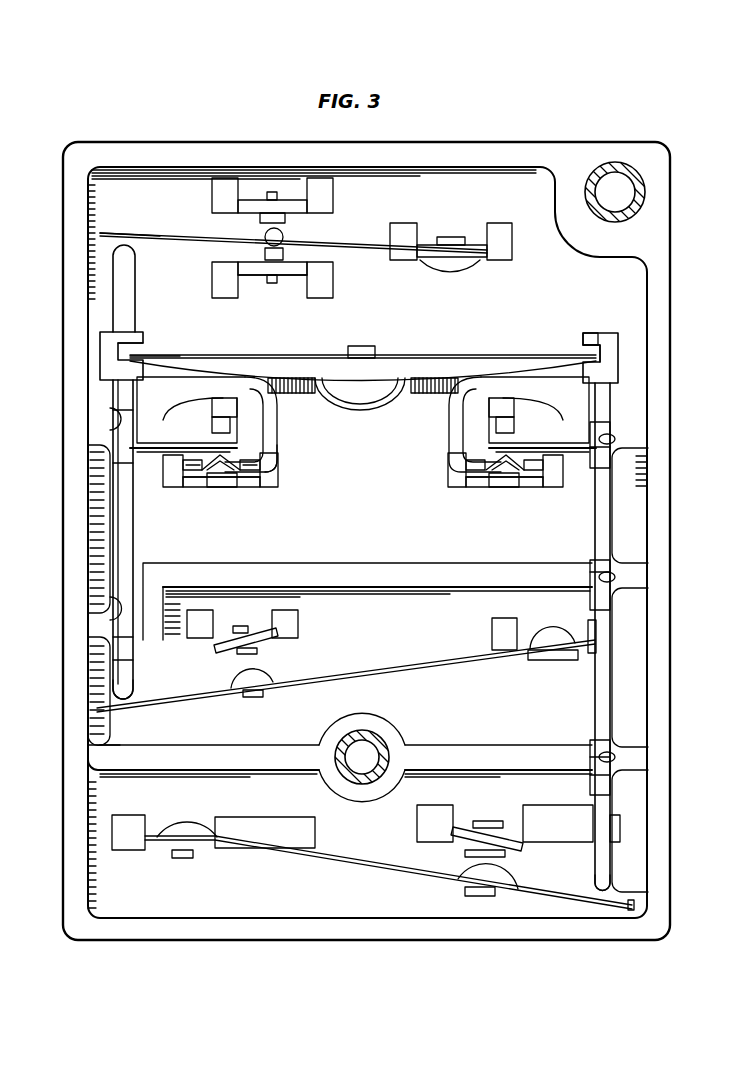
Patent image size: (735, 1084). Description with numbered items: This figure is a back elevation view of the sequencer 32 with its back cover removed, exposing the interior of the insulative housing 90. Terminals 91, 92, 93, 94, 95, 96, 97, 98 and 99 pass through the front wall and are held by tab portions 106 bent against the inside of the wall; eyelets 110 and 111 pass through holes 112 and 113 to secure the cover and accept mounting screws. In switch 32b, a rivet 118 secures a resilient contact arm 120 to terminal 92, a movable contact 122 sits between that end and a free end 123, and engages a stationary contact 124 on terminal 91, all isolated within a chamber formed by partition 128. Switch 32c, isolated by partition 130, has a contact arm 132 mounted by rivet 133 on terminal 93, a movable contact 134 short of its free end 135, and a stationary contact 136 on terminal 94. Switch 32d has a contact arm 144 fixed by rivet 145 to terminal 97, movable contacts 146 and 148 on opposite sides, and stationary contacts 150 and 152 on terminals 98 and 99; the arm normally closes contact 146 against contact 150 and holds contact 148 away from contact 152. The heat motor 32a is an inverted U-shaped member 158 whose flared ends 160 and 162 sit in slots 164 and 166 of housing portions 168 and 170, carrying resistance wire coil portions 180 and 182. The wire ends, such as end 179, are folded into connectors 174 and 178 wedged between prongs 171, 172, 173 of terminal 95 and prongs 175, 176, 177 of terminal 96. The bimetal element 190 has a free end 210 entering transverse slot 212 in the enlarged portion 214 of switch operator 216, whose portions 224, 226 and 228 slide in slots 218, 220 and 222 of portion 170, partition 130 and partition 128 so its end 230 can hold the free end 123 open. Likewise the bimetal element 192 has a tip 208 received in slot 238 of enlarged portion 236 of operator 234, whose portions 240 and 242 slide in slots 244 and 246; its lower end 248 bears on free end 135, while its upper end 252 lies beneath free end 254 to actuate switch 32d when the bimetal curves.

The sequencer 32 is at (63, 150).
The housing 90 is at (120, 150).
The stationary contact 152 is at (263, 213).
The terminal 99 is at (290, 208).
The movable contact 148 is at (284, 238).
The switch 32d is at (374, 218).
The tab portions 106 is at (500, 230).
The hole 112 is at (620, 183).
The tubular rivet or eyelet 110 is at (640, 199).
The free end of switch arm 254 is at (126, 232).
The upper end of operator 252 is at (122, 258).
The movable contact 146 is at (262, 251).
The resilient contact arm 144 is at (350, 247).
The rivet 145 is at (448, 272).
The terminal 97 is at (476, 258).
The slot 238 is at (150, 342).
The tip or free end of bimetal element 208 is at (130, 358).
The stationary contact 150 is at (268, 260).
The terminal 98 is at (292, 275).
The bimetal element 192 is at (292, 358).
The bimetal element 190 is at (418, 360).
The tip or free end of bimetal element 210 is at (593, 356).
The transverse slot 212 is at (598, 333).
The enlarged portion of switch operator 214 is at (616, 348).
The enlarged portion of switch operator 236 is at (100, 357).
The outwardly flared end 160 is at (222, 414).
The coil portion 182 is at (291, 395).
The coil portion 180 is at (420, 396).
The outwardly flared end 162 is at (505, 418).
The projecting portion of housing 170 is at (618, 423).
The slot 244 is at (116, 417).
The slot 164 is at (212, 420).
The inverted U-shaped member 158 is at (280, 426).
The connector 178 is at (200, 490).
The slot 166 is at (512, 428).
The slot 218 is at (615, 439).
The projecting portion of housing 168 is at (110, 454).
The end of resistance wire 179 is at (284, 452).
The portion of switch operator 224 is at (612, 458).
The portion of switch operator 240 is at (122, 458).
The projecting prong 173 is at (465, 468).
The elongated switch operator 216 is at (612, 508).
The projecting prong 175 is at (192, 465).
The terminal 96 is at (195, 487).
The projecting prong 176 is at (224, 488).
The projecting prong 177 is at (253, 485).
The terminal 95 is at (465, 490).
The connector 174 is at (500, 489).
The projecting prong 172 is at (507, 490).
The projecting prong 171 is at (548, 488).
The elongated switch operator 234 is at (120, 548).
The heat motor 32a is at (358, 492).
The partition or wall 130 is at (512, 573).
The slot 220 is at (615, 577).
The slot 246 is at (115, 606).
The portion of switch operator 226 is at (614, 594).
The portion of switch operator 242 is at (112, 636).
The terminal 94 is at (282, 636).
The switch 32c is at (373, 632).
The stationary contact 136 is at (240, 653).
The movable contact 134 is at (264, 672).
The terminal 93 is at (522, 650).
The rivet 133 is at (555, 662).
The lower end of operator 248 is at (118, 684).
The free end of contact arm 135 is at (100, 724).
The resilient contact arm 132 is at (302, 678).
The hole 113 is at (344, 733).
The tubular rivet or eyelet 111 is at (392, 738).
The partition or wall 128 is at (462, 758).
The slot 222 is at (615, 757).
The portion of switch operator 228 is at (606, 780).
The rivet 118 is at (182, 830).
The stationary contact 124 is at (475, 850).
The terminal 91 is at (520, 850).
The terminal 92 is at (158, 848).
The end of operator 230 is at (606, 870).
The switch 32b is at (288, 876).
The resilient flexible contact arm 120 is at (349, 862).
The movable contact 122 is at (517, 882).
The free end of contact arm 123 is at (628, 892).